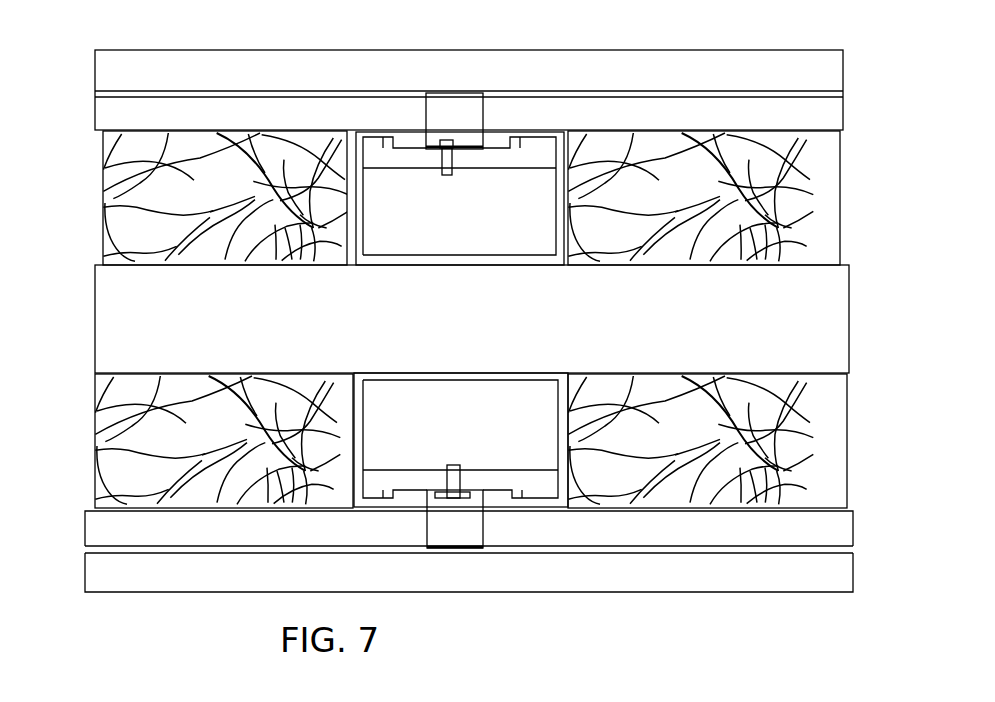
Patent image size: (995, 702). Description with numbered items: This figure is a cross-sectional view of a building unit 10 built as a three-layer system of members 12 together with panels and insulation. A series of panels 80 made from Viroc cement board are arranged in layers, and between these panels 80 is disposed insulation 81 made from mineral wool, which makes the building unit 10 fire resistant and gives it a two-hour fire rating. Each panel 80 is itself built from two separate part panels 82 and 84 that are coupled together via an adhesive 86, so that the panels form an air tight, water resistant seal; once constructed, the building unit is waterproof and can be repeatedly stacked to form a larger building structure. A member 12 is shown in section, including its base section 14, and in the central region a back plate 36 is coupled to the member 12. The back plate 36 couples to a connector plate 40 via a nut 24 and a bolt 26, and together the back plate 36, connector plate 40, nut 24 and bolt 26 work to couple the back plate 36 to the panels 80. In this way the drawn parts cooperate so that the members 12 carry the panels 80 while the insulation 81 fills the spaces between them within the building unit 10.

The building unit 10 is at (853, 154).
The member 12 is at (450, 368).
The base section 14 is at (460, 225).
The nut 24 is at (458, 140).
The bolt 26 is at (448, 162).
The back plate 36 is at (394, 162).
The connector plate 40 is at (433, 107).
The panel 80 is at (158, 569).
The insulation 81 is at (131, 214).
The part panel 82 is at (743, 523).
The part panel 84 is at (823, 573).
The adhesive 86 is at (546, 549).